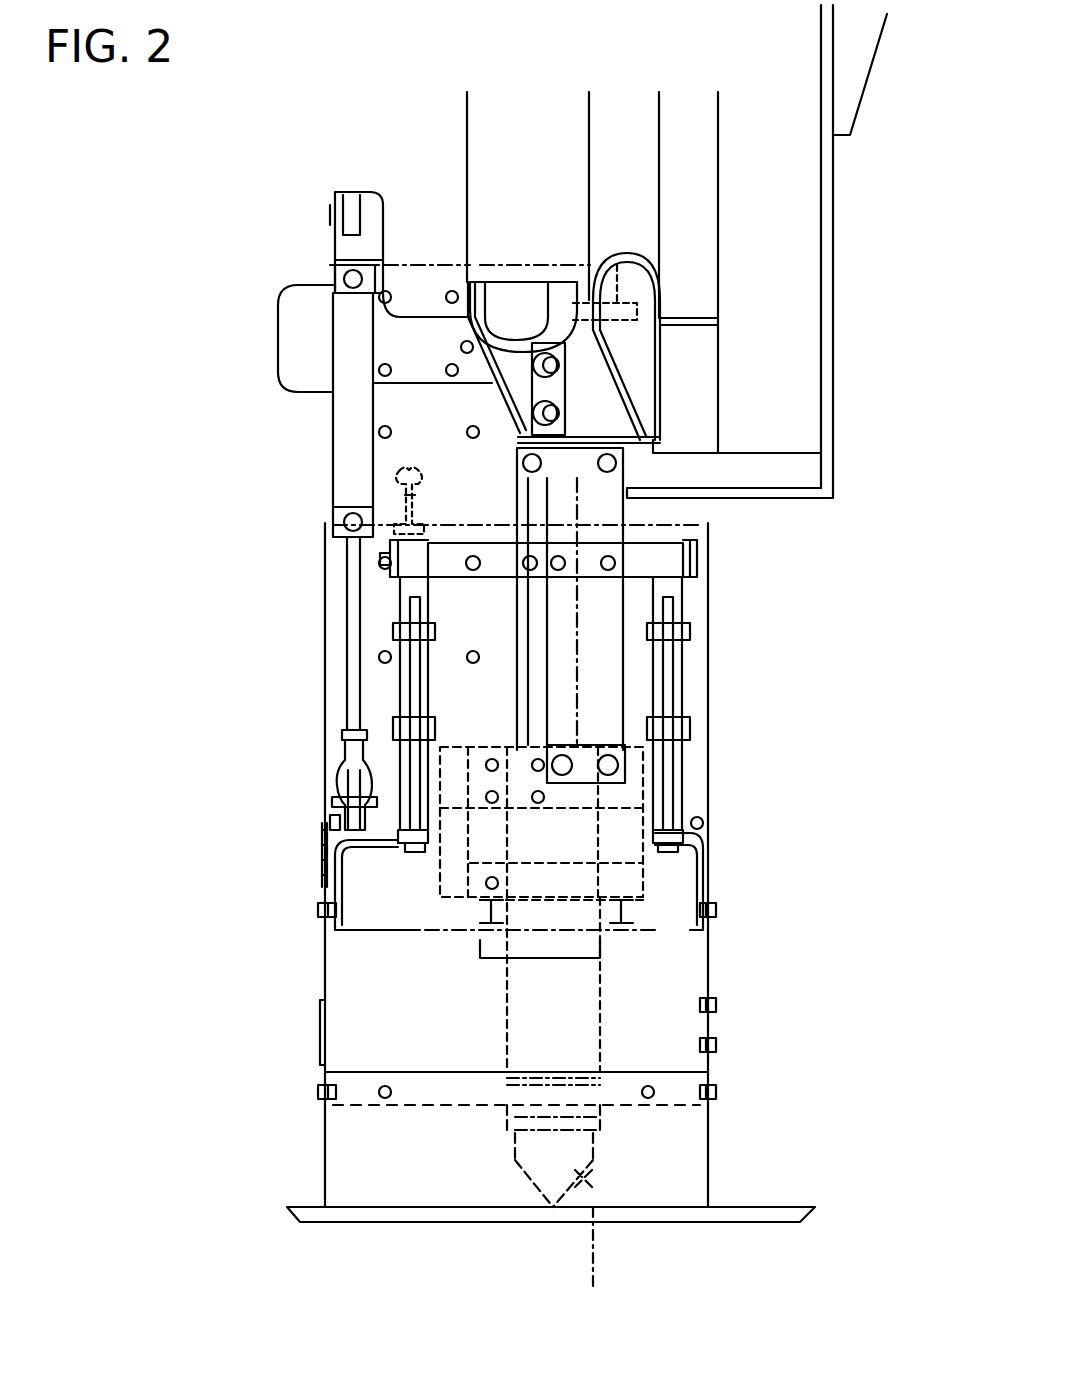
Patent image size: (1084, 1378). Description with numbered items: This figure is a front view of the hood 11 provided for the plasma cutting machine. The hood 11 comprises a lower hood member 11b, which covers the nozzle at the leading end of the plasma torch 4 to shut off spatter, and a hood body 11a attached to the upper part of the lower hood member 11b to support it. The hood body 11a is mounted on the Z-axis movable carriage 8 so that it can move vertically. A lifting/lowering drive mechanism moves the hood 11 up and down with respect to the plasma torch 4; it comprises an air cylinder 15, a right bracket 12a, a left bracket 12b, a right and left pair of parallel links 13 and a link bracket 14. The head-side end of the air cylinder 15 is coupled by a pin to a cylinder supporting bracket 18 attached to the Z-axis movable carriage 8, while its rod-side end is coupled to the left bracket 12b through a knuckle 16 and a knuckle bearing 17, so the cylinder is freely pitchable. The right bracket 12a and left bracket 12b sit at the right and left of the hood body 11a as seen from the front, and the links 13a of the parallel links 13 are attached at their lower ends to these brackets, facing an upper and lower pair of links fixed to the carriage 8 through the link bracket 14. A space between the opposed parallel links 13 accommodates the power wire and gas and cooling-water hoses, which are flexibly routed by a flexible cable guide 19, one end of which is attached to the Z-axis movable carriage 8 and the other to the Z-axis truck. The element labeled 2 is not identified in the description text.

The base plate 2 is at (768, 1207).
The plasma torch 4 is at (601, 1271).
The Z-axis movable carriage 8 is at (590, 400).
The hood 11 is at (852, 963).
The hood body 11a is at (690, 985).
The lower hood member 11b is at (700, 1138).
The right bracket 12a is at (705, 863).
The left bracket 12b is at (328, 853).
The parallel links 13 is at (407, 697).
The links 13a is at (410, 683).
The link bracket 14 is at (590, 548).
The air cylinder 15 is at (350, 375).
The knuckle 16 is at (348, 758).
The knuckle bearing 17 is at (325, 812).
The cylinder supporting bracket 18 is at (350, 192).
The flexible cable guide 19 is at (500, 150).